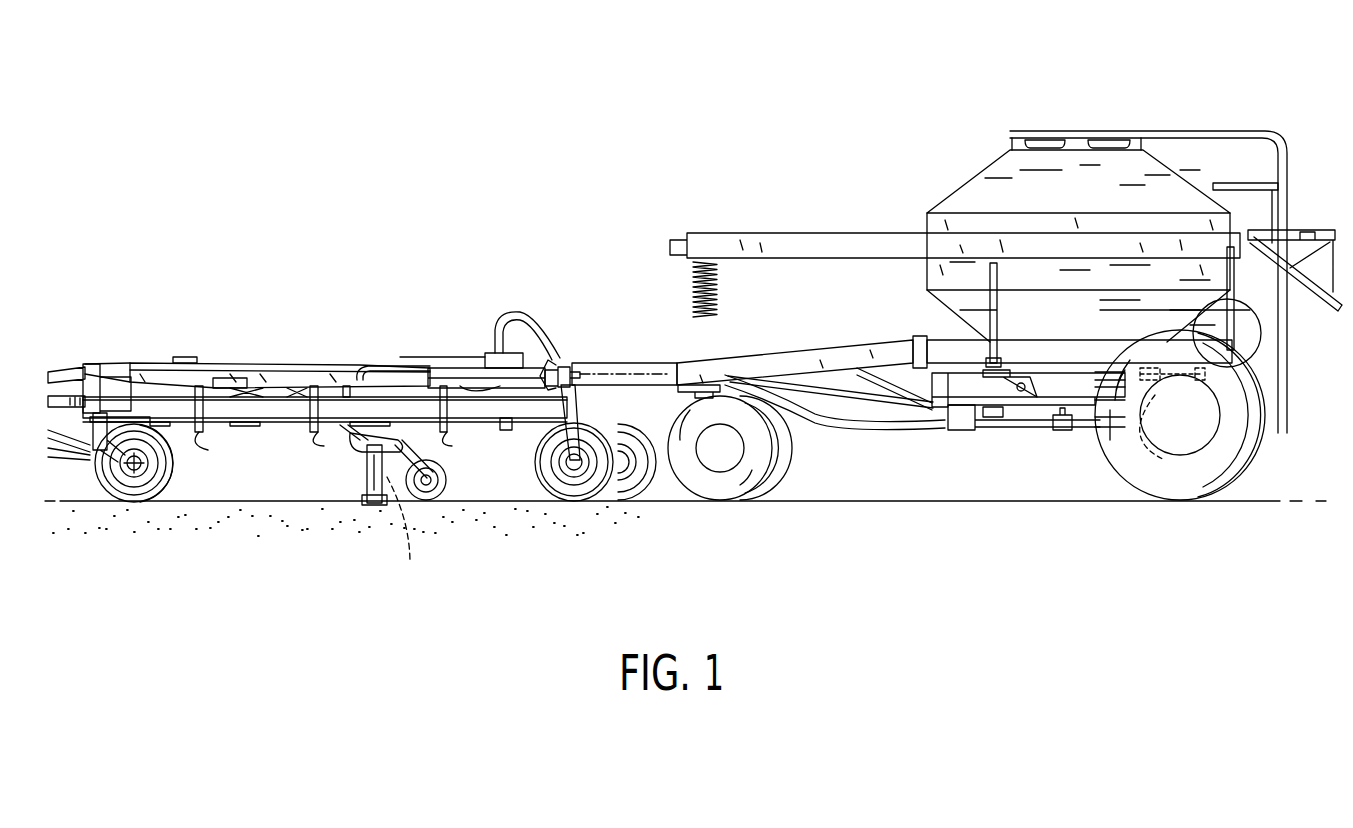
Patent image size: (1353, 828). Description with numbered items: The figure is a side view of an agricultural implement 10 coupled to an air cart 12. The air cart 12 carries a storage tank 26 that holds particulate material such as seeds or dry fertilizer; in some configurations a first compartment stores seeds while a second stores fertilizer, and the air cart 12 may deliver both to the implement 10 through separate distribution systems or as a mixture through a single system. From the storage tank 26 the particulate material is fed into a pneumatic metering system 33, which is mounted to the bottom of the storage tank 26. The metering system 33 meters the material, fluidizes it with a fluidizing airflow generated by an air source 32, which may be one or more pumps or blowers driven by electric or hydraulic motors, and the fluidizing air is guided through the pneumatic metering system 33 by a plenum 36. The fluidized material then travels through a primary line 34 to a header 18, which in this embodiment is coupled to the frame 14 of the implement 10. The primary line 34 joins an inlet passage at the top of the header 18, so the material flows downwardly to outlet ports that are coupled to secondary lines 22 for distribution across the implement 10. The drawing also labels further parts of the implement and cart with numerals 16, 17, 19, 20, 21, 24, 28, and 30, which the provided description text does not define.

The agricultural implement 10 is at (330, 300).
The air cart 12 is at (968, 98).
The frame 14 is at (366, 365).
The row unit arm 16 is at (334, 476).
The opener shank 17 is at (363, 503).
The header 18 is at (489, 350).
The gauge wheel 19 is at (443, 477).
The wheels 20 is at (582, 420).
The closing disc path 21 is at (410, 556).
The secondary lines 22 is at (434, 355).
The hitch 24 is at (562, 362).
The storage tank 26 is at (997, 172).
The tongue 28 is at (795, 355).
The tires 30 is at (1178, 500).
The air source 32 is at (1253, 333).
The pneumatic metering system 33 is at (1032, 382).
The primary line 34 is at (847, 428).
The plenum 36 is at (1177, 390).